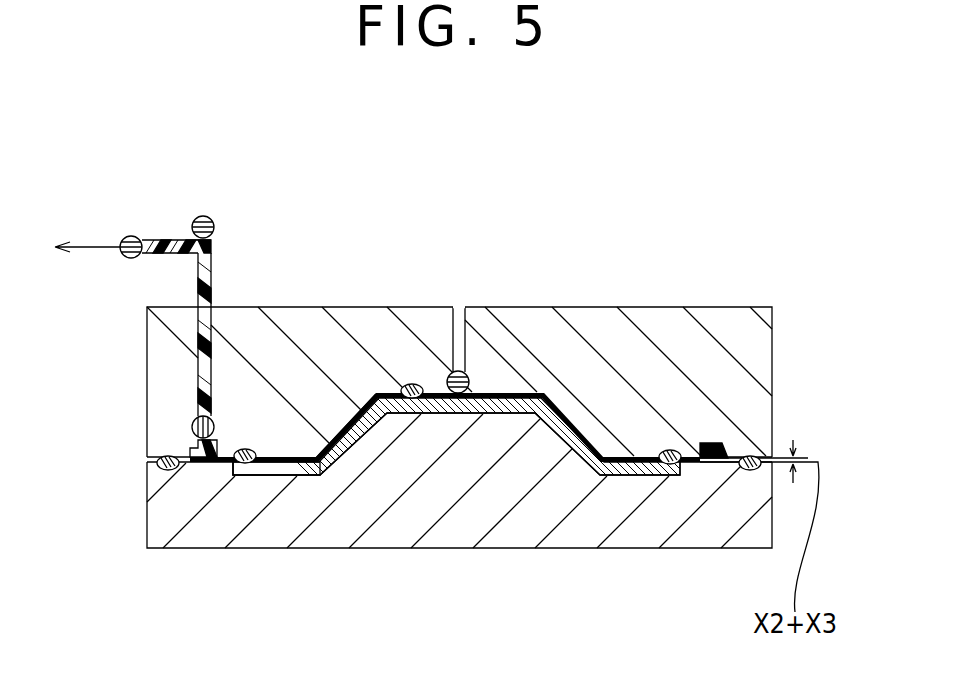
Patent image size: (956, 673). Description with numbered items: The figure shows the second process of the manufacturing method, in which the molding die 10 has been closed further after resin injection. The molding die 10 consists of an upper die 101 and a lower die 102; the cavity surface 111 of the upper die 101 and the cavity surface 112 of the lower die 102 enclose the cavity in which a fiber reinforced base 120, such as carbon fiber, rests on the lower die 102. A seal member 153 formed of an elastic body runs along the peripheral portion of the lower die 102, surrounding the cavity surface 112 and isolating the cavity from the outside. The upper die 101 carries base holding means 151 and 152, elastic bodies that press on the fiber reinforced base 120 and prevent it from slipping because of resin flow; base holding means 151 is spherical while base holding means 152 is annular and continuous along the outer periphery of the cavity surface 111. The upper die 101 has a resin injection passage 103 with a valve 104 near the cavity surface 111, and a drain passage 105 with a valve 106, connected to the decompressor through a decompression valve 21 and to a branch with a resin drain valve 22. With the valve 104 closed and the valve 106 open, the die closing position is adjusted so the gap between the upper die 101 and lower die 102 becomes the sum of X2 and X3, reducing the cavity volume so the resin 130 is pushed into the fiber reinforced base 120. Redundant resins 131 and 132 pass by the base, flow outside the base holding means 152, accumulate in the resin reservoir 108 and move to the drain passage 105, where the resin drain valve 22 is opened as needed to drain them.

The molding die 10 is at (725, 242).
The decompression valve 21 is at (206, 216).
The resin drain valve 22 is at (130, 236).
The upper die 101 is at (648, 323).
The lower die 102 is at (595, 537).
The resin injection passage 103 is at (458, 298).
The valve 104 is at (468, 380).
The drain passage 105 is at (213, 338).
The valve 106 is at (191, 417).
The resin reservoir 108 is at (723, 443).
The cavity surface 111 is at (350, 418).
The cavity surface 112 is at (330, 463).
The fiber reinforced base 120 is at (268, 476).
The resin 130 is at (388, 410).
The redundant resin 131 is at (210, 468).
The redundant resin 132 is at (650, 473).
The base holding means 151 is at (408, 385).
The base holding means 152 is at (245, 449).
The seal member 153 is at (168, 470).